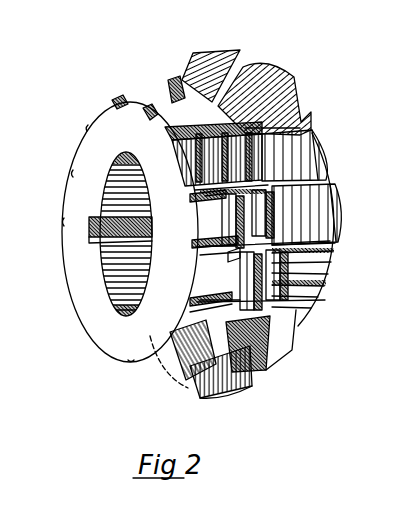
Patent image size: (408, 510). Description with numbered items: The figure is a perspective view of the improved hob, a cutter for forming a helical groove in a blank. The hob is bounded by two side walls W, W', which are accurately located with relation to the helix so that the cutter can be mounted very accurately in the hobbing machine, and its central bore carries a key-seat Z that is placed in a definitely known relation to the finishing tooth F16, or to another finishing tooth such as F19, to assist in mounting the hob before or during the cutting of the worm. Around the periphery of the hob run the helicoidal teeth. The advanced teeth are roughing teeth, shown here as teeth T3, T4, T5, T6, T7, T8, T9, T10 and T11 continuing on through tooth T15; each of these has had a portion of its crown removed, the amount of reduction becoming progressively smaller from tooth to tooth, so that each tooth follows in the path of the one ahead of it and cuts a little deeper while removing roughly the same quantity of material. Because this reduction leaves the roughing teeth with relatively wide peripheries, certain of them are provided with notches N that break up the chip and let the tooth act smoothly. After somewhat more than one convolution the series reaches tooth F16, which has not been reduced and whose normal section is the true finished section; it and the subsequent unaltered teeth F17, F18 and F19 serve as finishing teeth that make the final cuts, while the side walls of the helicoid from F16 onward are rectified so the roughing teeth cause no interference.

The side wall W is at (114, 232).
The side wall W' is at (316, 229).
The key-seat Z is at (88, 230).
The notches N is at (268, 292).
The roughing tooth T3 is at (115, 97).
The roughing tooth T4 is at (147, 112).
The roughing tooth T5 is at (175, 142).
The roughing tooth T6 is at (190, 197).
The roughing tooth T7 is at (192, 243).
The roughing tooth T8 is at (190, 305).
The roughing tooth T9 is at (244, 366).
The roughing tooth T10 is at (205, 396).
The roughing tooth T11 is at (175, 386).
The roughing tooth T15 is at (174, 78).
The finishing tooth F16 is at (234, 52).
The finishing tooth F17 is at (298, 83).
The finishing tooth F18 is at (288, 180).
The finishing tooth F19 is at (350, 251).